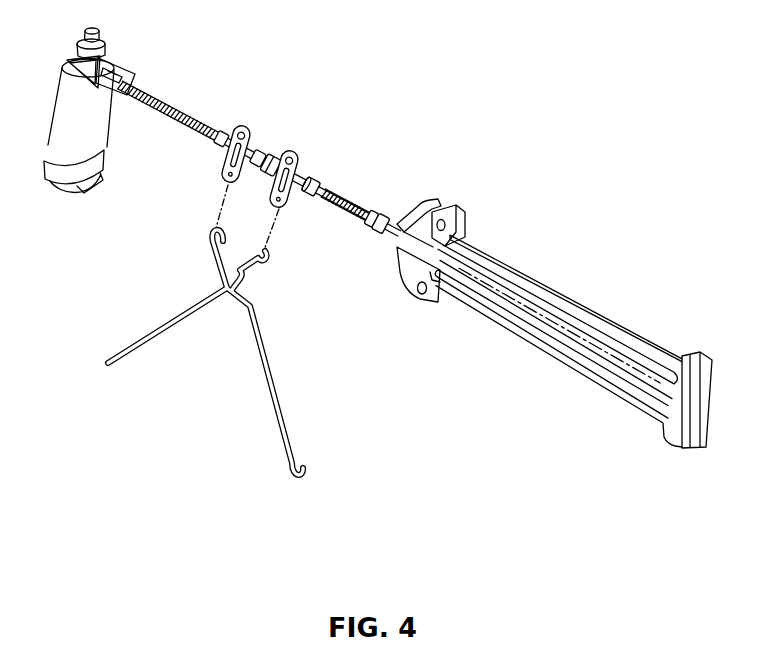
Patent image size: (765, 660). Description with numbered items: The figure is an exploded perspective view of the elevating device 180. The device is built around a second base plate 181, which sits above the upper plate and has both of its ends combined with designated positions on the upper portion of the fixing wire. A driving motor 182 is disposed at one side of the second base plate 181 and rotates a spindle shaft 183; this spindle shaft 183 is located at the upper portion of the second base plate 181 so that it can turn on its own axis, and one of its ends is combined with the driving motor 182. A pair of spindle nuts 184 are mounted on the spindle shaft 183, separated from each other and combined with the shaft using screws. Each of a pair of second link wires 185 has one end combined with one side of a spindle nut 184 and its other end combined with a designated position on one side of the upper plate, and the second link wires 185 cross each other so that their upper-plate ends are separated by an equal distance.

The slide assembly 180 is at (538, 210).
The pivot bracket 181 is at (400, 222).
The motor 182 is at (97, 34).
The threaded drive rod 183 is at (325, 188).
The slotted mounting plate 184 is at (247, 123).
The wire hanger bracket 185 is at (290, 462).